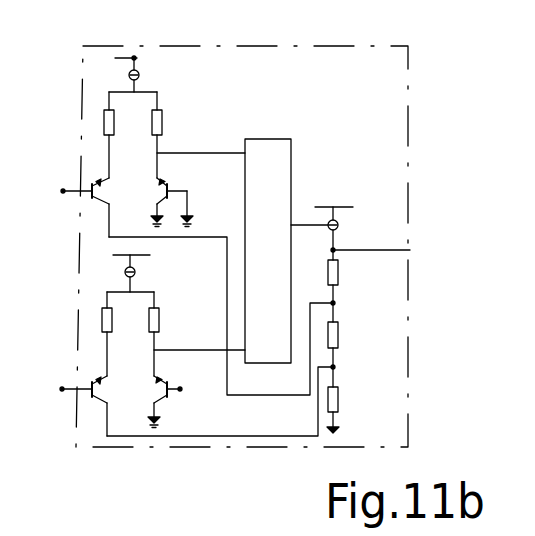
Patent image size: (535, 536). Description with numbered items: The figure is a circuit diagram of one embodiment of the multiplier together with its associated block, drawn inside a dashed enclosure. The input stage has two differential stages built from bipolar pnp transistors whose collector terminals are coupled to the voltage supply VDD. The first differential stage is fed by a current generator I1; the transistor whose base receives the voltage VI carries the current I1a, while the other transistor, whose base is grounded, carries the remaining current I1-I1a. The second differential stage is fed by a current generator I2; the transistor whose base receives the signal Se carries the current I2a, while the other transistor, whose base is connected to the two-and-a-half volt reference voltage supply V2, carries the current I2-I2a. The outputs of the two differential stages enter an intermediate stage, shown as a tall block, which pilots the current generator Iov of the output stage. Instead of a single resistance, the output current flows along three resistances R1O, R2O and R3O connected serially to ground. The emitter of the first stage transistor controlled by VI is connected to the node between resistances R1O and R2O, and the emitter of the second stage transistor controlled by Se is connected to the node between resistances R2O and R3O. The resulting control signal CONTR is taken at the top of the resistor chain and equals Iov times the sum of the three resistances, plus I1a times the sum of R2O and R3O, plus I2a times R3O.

The voltage supply VDD is at (137, 58).
The current generator I1 is at (145, 67).
The current in first stage differential transistor I1a is at (98, 115).
The remaining first stage current I1-I1a is at (167, 115).
The voltage Vi VI is at (62, 173).
The current generator I2 is at (142, 262).
The current in second stage differential transistor I2a is at (95, 312).
The remaining second stage current I2-I2a is at (165, 312).
The voltage Se is at (61, 372).
The reference voltage supply V2 is at (180, 389).
The current generator Iov is at (344, 217).
The resistance R1O is at (363, 290).
The resistance R2O is at (363, 354).
The resistance R3O is at (362, 409).
The signal Contr CONTR is at (388, 251).